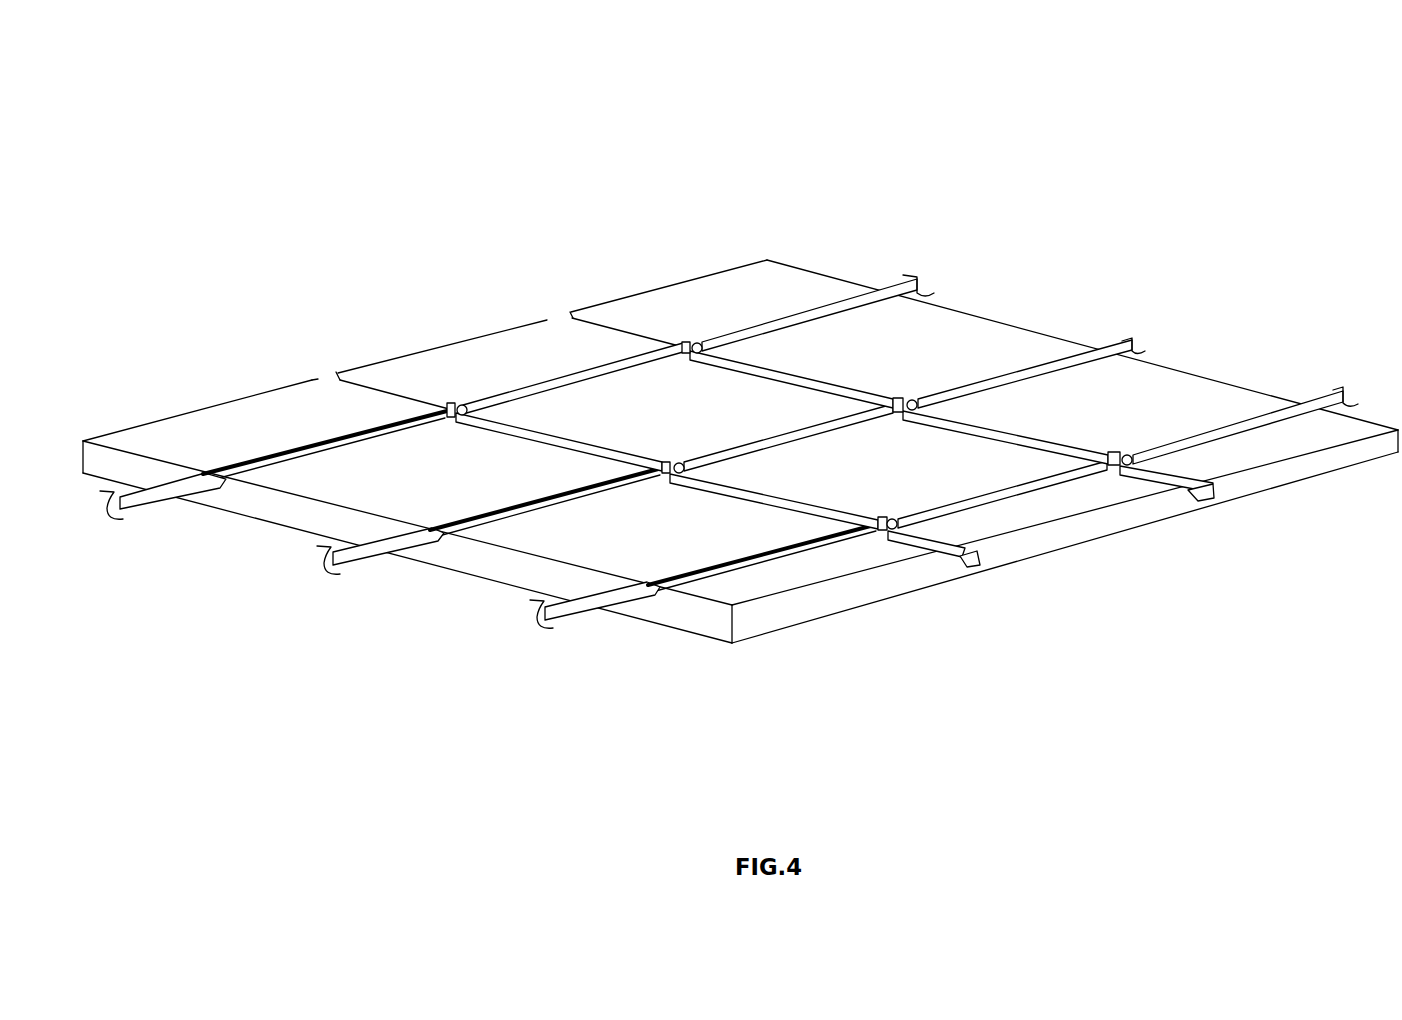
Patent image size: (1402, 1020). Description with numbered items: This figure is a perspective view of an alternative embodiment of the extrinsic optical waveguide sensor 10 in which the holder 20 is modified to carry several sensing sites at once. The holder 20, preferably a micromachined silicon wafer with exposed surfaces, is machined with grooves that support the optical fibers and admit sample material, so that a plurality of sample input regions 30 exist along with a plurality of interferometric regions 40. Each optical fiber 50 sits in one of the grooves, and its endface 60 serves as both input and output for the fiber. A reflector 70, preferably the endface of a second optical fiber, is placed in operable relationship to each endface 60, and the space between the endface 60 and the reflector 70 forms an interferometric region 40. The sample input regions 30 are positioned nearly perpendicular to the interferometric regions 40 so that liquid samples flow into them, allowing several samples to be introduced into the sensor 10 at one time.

The extrinsic optical waveguide sensor 10 is at (690, 72).
The holder 20 is at (398, 375).
The sample input region 30 is at (987, 560).
The interferometric region 40 is at (450, 386).
The optical fiber 50 is at (125, 500).
The endface 60 is at (443, 405).
The reflector 70 is at (466, 406).